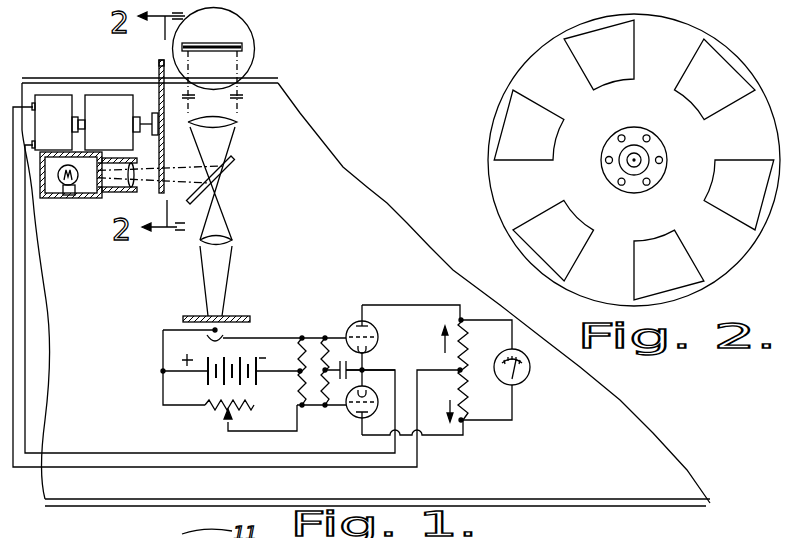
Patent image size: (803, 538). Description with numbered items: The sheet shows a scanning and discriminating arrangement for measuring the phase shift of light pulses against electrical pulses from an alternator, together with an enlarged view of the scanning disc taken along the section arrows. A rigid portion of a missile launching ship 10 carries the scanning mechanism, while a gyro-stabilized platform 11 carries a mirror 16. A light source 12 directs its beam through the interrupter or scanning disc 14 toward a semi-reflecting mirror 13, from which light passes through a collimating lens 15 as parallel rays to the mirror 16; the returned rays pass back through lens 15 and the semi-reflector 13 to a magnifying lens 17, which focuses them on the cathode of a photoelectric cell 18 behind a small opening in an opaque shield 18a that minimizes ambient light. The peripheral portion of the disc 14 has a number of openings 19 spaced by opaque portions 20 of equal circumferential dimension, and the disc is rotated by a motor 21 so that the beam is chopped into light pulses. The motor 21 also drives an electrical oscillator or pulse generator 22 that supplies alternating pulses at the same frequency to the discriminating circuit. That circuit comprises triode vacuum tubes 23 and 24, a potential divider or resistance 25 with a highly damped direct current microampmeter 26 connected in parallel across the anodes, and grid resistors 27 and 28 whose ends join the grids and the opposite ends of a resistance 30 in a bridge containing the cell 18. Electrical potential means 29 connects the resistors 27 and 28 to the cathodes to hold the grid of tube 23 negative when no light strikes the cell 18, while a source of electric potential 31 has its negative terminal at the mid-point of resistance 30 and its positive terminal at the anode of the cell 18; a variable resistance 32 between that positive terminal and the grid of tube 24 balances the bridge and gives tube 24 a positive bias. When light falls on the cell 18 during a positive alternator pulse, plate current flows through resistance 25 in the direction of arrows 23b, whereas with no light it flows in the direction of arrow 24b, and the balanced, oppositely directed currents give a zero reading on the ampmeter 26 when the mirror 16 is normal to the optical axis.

In FIG. 1, the rigid portion of missile launching ship 10 is at (528, 500).
In FIG. 1, the gyro-stabilized platform 11 is at (255, 35).
In FIG. 1, the light source 12 is at (85, 202).
In FIG. 1, the semi-reflecting mirror 13 is at (233, 167).
In FIG. 1, the scanning disc 14 is at (162, 192).
In FIG. 2, the scanning disc 14 is at (658, 228).
In FIG. 1, the collimating lens 15 is at (238, 120).
In FIG. 1, the mirror 16 is at (190, 41).
In FIG. 1, the magnifying lens 17 is at (231, 236).
In FIG. 1, the photoelectric cell 18 is at (222, 331).
In FIG. 1, the opaque shield 18a is at (240, 316).
In FIG. 1, the openings 19 is at (157, 63).
In FIG. 2, the openings 19 is at (537, 226).
In FIG. 2, the opaque portions 20 is at (492, 181).
In FIG. 1, the motor 21 is at (121, 122).
In FIG. 1, the pulse generator 22 is at (58, 122).
In FIG. 1, the triode vacuum tube 23 is at (376, 328).
In FIG. 1, the arrows 23b is at (440, 355).
In FIG. 1, the triode vacuum tube 24 is at (372, 414).
In FIG. 1, the arrow 24b is at (454, 413).
In FIG. 1, the potential divider 25 is at (466, 338).
In FIG. 1, the direct current microampmeter 26 is at (519, 383).
In FIG. 1, the grid resistor 27 is at (325, 340).
In FIG. 1, the grid resistor 28 is at (344, 398).
In FIG. 1, the electrical potential means 29 is at (344, 325).
In FIG. 1, the resistance 30 is at (299, 368).
In FIG. 1, the source of electric potential 31 is at (256, 385).
In FIG. 1, the variable resistance 32 is at (207, 409).